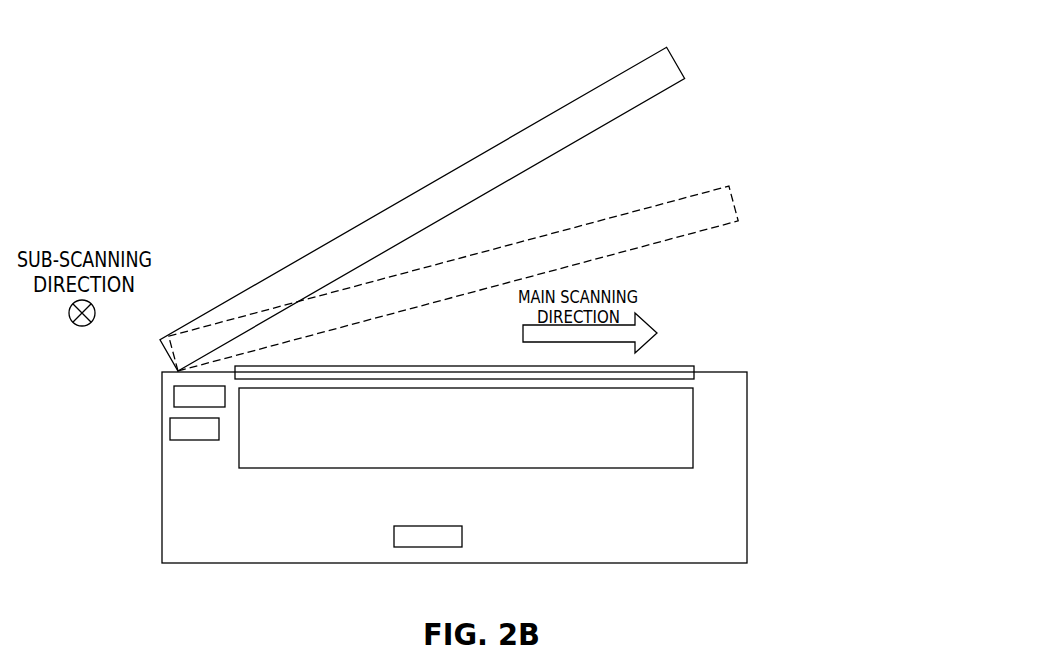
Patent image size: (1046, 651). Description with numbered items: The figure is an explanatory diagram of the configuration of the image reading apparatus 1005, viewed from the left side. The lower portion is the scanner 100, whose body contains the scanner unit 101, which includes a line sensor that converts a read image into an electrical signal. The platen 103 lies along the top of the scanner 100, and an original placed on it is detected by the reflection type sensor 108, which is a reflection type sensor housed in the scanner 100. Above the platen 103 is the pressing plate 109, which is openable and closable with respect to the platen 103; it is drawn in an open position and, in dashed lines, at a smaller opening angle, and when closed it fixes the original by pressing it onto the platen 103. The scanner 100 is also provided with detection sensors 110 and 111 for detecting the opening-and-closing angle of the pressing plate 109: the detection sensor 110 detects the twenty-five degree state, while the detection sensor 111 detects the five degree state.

The scanner 100 is at (747, 400).
The scanner unit 101 is at (668, 470).
The platen 103 is at (683, 365).
The reflection type sensor 108 is at (394, 535).
The pressing plate 109 is at (338, 237).
The detection sensor 110 is at (174, 396).
The detection sensor 111 is at (170, 429).
The image reading apparatus 1005 is at (838, 150).